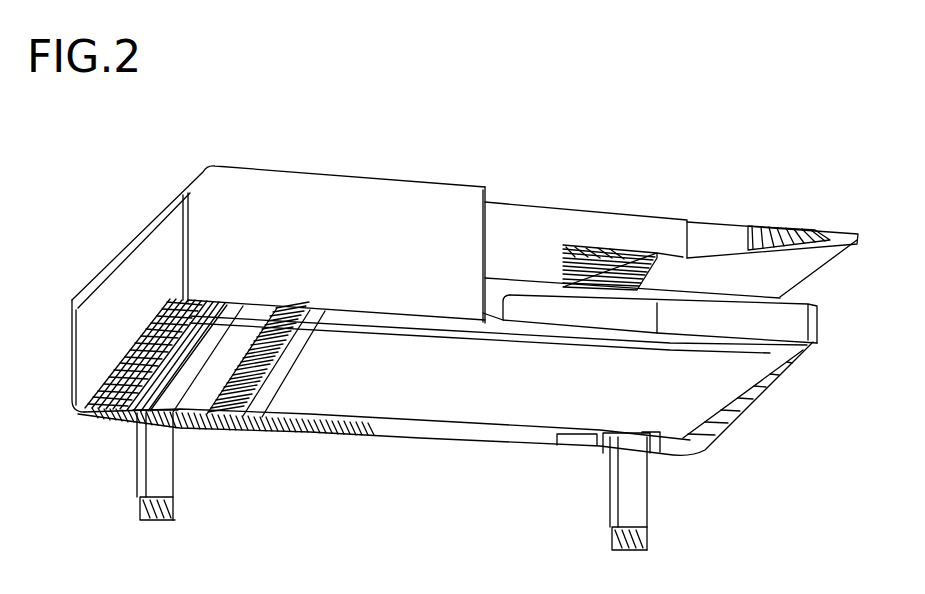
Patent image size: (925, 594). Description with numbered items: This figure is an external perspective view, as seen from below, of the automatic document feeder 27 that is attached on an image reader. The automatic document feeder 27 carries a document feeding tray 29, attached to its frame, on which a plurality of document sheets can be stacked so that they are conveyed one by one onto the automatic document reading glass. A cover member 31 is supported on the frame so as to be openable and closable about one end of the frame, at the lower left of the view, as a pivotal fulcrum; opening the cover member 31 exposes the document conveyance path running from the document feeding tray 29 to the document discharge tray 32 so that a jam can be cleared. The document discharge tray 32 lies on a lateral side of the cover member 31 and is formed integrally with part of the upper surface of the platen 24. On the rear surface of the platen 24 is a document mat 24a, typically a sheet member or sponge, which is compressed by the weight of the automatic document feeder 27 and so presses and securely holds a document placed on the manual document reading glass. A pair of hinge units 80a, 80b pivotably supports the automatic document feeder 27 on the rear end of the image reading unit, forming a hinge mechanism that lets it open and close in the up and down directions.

The automatic document feeder 27 is at (628, 127).
The cover member 31 is at (207, 166).
The document feeding tray 29 is at (707, 221).
The document discharge tray 32 is at (780, 297).
The platen 24 is at (742, 402).
The document mat 24a is at (677, 402).
The hinge unit 80a is at (605, 502).
The hinge unit 80b is at (145, 458).